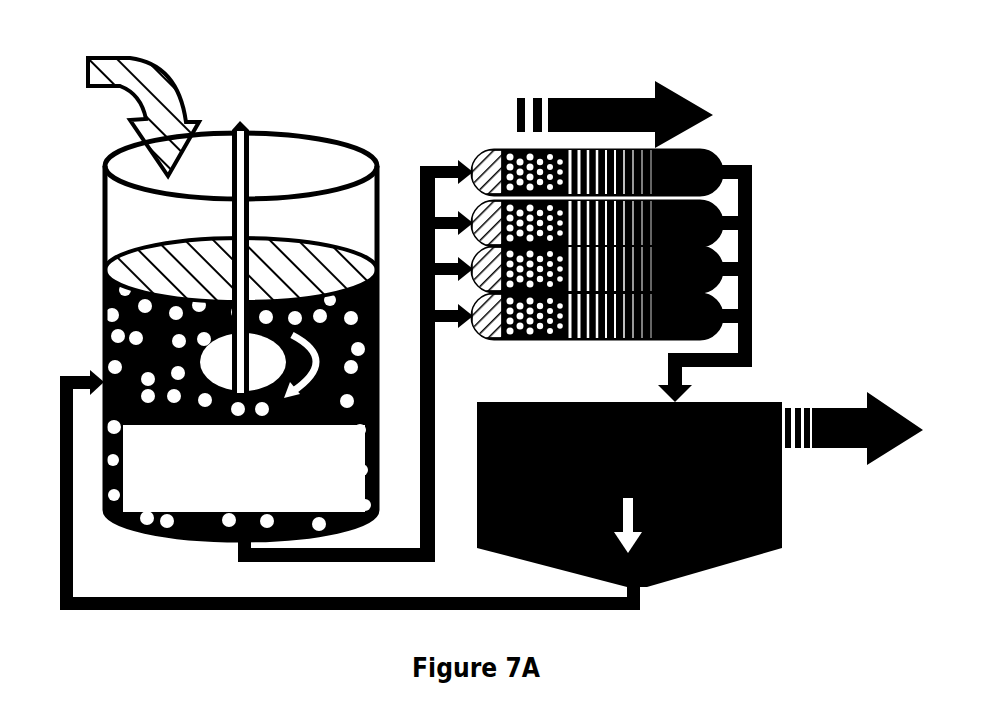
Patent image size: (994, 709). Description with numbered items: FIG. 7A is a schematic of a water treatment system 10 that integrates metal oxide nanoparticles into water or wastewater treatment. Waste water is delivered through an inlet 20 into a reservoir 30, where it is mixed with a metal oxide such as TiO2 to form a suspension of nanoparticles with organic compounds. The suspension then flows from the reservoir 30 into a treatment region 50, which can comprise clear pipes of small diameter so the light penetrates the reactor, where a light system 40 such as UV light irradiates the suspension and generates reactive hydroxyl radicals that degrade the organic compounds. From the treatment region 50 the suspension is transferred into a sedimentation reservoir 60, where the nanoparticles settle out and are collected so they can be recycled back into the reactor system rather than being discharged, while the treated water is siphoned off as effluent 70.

The water treatment system 10 is at (790, 71).
The inlet 20 is at (178, 50).
The reservoir 30 is at (381, 120).
The light system 40 is at (590, 78).
The treatment region 50 is at (740, 146).
The sedimentation reservoir 60 is at (803, 532).
The effluent 70 is at (832, 380).